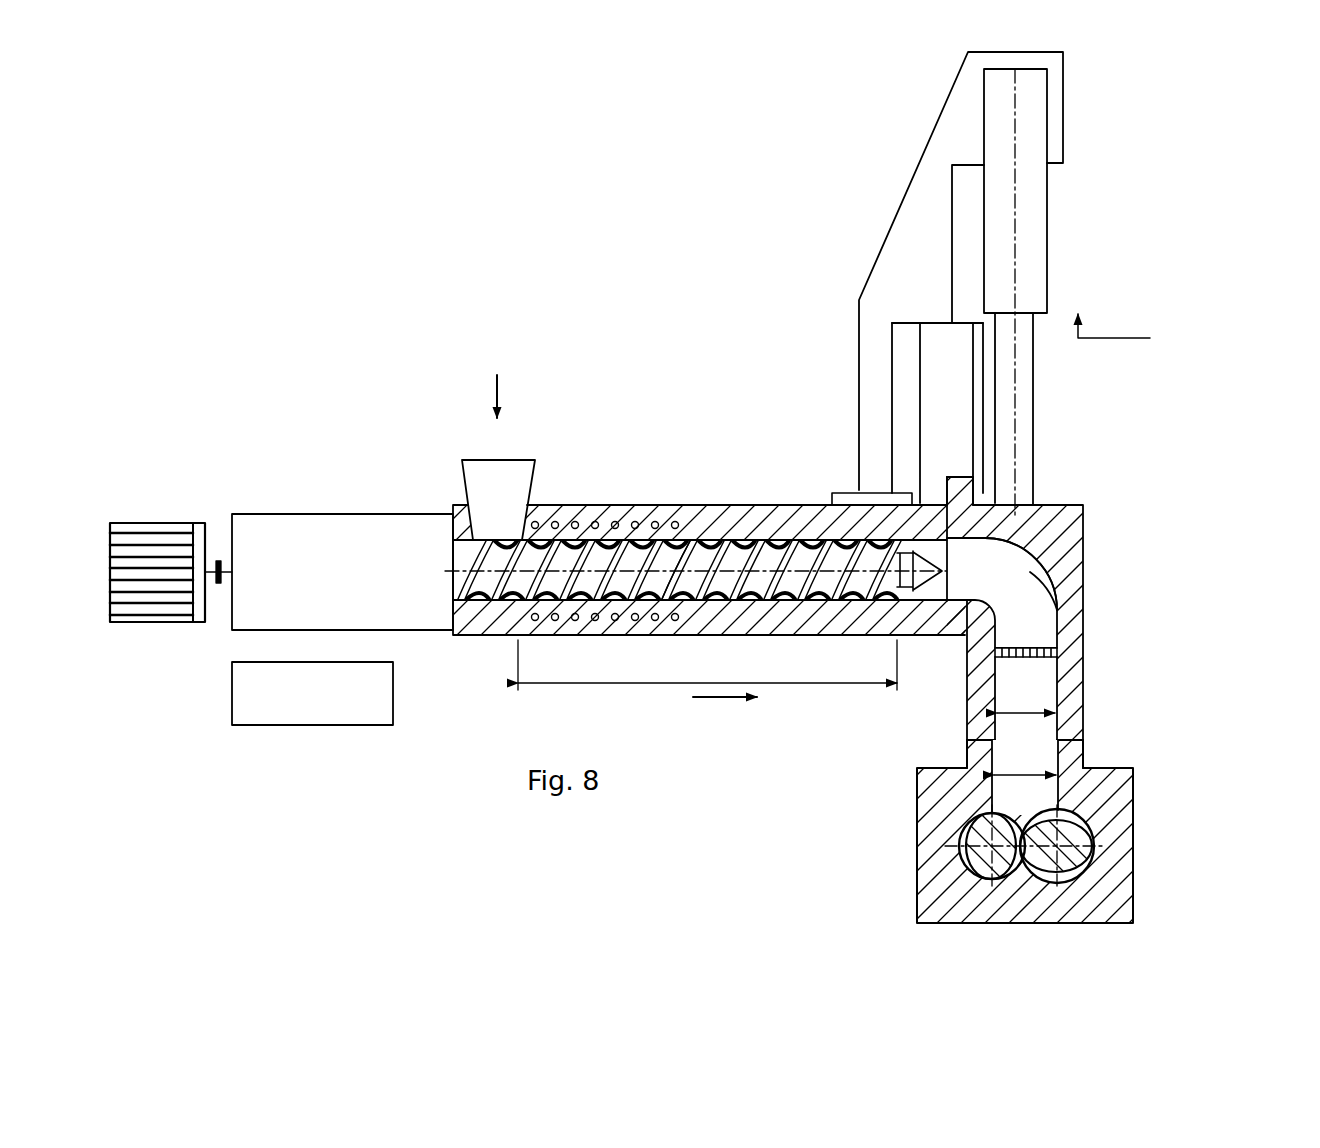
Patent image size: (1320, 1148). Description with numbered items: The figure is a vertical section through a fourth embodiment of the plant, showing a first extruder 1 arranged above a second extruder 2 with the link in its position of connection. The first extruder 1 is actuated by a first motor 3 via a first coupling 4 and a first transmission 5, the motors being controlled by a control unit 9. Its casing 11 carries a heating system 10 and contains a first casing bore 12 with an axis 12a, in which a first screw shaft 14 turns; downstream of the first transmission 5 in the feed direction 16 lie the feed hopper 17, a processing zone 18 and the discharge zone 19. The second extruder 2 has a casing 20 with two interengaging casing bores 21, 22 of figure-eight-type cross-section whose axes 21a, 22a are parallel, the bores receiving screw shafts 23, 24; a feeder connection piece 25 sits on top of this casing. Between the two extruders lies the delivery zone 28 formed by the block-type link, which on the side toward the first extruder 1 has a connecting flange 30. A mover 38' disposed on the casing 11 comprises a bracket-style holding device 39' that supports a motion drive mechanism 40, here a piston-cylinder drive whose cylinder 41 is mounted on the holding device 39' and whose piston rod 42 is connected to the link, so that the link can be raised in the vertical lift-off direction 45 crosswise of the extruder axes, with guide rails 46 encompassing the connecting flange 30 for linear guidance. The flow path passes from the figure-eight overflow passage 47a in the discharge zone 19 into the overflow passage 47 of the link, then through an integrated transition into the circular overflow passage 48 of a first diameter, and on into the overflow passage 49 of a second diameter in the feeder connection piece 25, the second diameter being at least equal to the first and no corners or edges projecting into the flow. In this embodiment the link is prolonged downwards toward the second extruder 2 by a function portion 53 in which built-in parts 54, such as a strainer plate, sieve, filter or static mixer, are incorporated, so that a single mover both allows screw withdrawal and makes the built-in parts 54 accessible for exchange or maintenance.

The first extruder 1 is at (601, 500).
The second extruder 2 is at (1138, 789).
The first motor 3 is at (153, 622).
The first coupling 4 is at (218, 590).
The first transmission 5 is at (430, 620).
The control unit 9 is at (393, 707).
The heating system 10 is at (553, 521).
The casing 11 is at (487, 632).
The first casing bore 12 is at (717, 547).
The axis 12a is at (670, 565).
The first screw shaft 14 is at (762, 560).
The feed direction 16 is at (722, 702).
The feed hopper 17 is at (470, 478).
The processing zone 18 is at (707, 665).
The discharge zone 19 is at (920, 540).
The casing 20 is at (932, 873).
The casing bore 21 is at (957, 842).
The axis 21a is at (920, 900).
The casing bore 22 is at (1040, 887).
The axis 22a is at (1070, 860).
The screw shaft 23 is at (982, 815).
The screw shaft 24 is at (1060, 818).
The feeder connection piece 25 is at (965, 757).
The delivery zone 28 is at (1103, 580).
The connecting flange 30 is at (987, 500).
The mover 38' is at (935, 278).
The holding device 39' is at (881, 244).
The motion drive mechanism 40 is at (1056, 194).
The cylinder 41 is at (1040, 270).
The piston rod 42 is at (1030, 418).
The lift-off direction 45 is at (1135, 327).
The guide rails 46 is at (940, 400).
The overflow passage 47 is at (965, 580).
The overflow passage 47a is at (957, 600).
The overflow passage 48 is at (1033, 628).
The overflow passage 49 is at (995, 785).
The function portion 53 is at (1073, 703).
The built-in parts 54 is at (1060, 652).